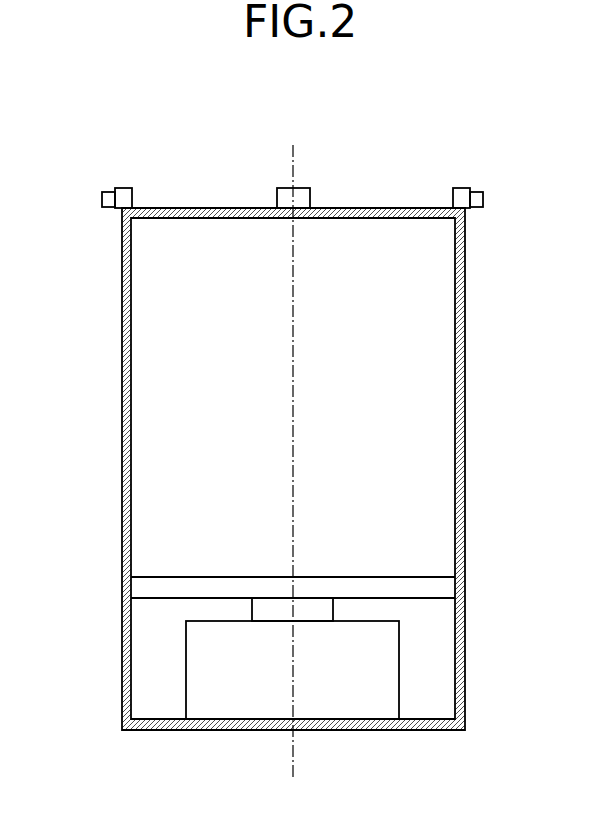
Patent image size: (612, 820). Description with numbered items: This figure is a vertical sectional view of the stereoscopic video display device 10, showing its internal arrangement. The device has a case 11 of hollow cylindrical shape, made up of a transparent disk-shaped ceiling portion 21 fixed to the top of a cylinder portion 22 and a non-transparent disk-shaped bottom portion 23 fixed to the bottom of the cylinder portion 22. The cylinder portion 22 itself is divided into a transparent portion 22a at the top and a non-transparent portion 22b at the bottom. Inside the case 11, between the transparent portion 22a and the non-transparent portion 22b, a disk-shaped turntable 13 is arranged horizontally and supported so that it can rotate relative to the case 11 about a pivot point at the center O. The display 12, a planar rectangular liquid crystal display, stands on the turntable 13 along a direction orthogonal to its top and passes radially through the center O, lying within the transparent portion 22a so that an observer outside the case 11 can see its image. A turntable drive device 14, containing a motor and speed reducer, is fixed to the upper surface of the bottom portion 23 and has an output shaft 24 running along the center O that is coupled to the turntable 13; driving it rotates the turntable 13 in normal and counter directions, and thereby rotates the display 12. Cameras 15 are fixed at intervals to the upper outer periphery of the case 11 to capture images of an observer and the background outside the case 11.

The stereoscopic video display device 10 is at (378, 137).
The case 11 is at (469, 248).
The display 12 is at (460, 325).
The turntable 13 is at (437, 572).
The turntable drive device 14 is at (402, 670).
The cameras 15 is at (121, 185).
The ceiling portion 21 is at (204, 213).
The cylinder portion 22 is at (127, 361).
The transparent portion 22a is at (127, 264).
The non-transparent portion 22b is at (128, 643).
The bottom portion 23 is at (207, 731).
The output shaft 24 is at (318, 609).
The center O is at (291, 160).